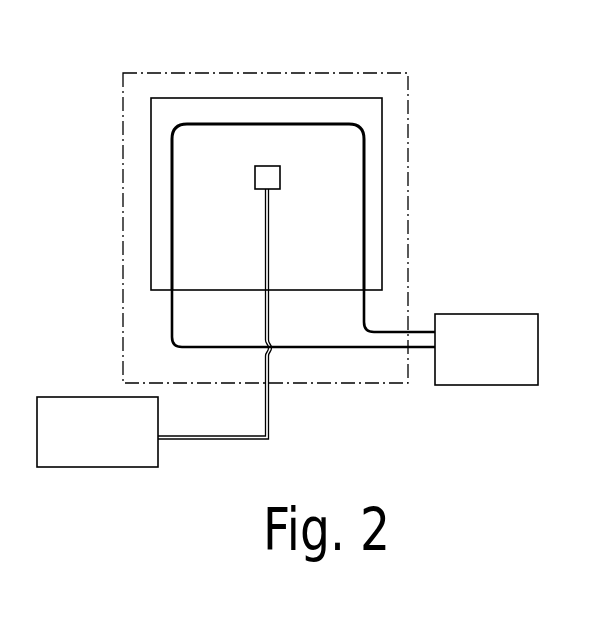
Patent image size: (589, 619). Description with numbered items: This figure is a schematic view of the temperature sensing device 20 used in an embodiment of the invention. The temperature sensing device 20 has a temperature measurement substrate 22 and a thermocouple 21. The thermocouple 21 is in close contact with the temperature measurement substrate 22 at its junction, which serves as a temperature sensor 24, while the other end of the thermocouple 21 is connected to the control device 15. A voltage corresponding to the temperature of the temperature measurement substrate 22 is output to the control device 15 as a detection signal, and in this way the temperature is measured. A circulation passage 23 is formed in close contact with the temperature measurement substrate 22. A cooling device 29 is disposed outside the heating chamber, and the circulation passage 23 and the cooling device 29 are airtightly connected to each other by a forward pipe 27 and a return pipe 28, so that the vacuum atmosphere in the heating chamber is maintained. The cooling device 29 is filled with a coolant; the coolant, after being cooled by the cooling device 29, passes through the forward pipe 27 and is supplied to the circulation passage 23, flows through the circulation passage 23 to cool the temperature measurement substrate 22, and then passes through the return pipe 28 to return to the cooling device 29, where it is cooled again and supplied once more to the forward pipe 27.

The control device 15 is at (123, 467).
The temperature sensing device 20 is at (123, 115).
The thermocouple 21 is at (270, 398).
The temperature measurement substrate 22 is at (382, 110).
The circulation passage 23 is at (365, 185).
The temperature sensor 24 is at (281, 178).
The forward pipe 27 is at (171, 325).
The return pipe 28 is at (366, 315).
The cooling device 29 is at (507, 385).